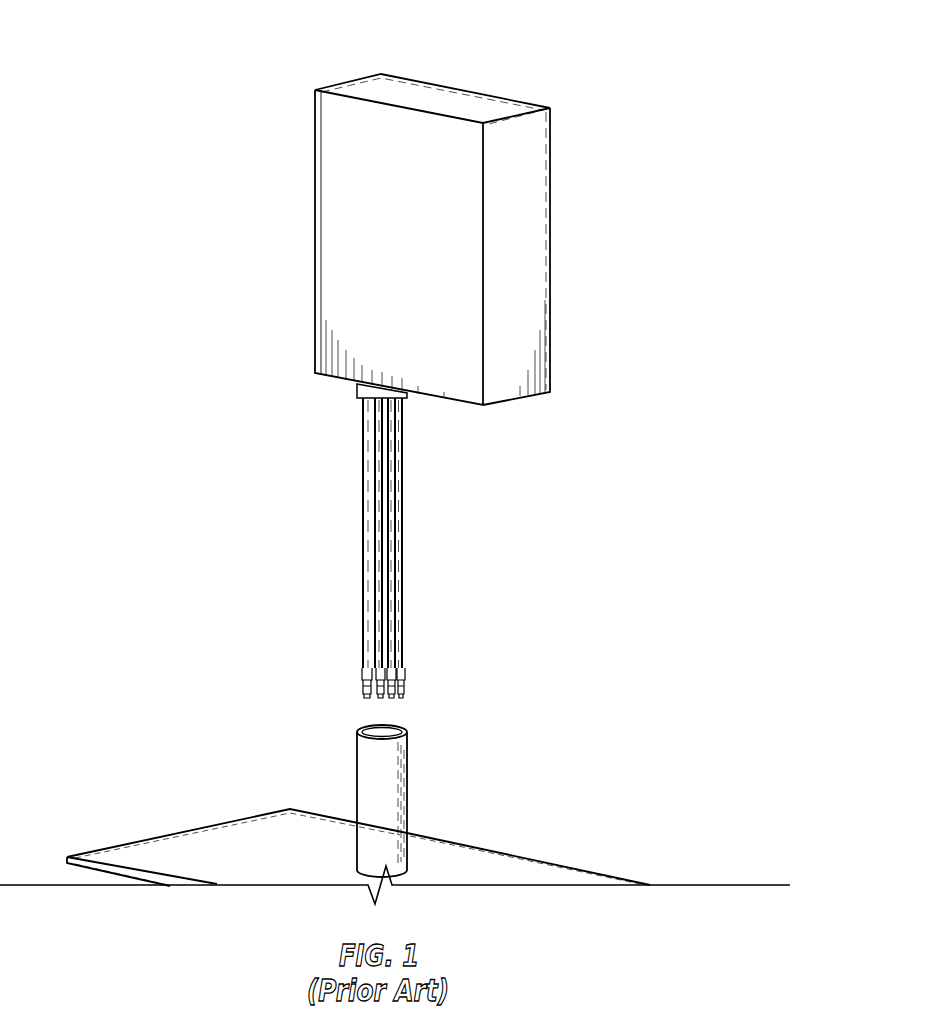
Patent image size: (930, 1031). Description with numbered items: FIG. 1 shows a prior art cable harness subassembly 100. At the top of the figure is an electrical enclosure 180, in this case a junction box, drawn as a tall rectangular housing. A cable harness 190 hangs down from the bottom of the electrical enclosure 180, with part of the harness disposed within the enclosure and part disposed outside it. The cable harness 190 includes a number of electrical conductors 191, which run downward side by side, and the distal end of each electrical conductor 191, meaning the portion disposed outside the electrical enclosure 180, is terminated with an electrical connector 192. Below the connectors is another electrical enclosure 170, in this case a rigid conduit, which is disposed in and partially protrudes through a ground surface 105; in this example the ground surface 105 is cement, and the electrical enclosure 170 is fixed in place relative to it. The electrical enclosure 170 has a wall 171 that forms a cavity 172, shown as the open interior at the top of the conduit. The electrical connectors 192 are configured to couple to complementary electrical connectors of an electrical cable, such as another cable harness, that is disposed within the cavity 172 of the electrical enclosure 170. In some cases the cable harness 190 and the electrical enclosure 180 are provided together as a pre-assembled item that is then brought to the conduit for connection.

The cable harness subassembly 100 is at (180, 58).
The ground surface 105 is at (503, 866).
The electrical enclosure 170 is at (396, 791).
The wall 171 is at (357, 790).
The cavity 172 is at (383, 731).
The electrical enclosure 180 is at (555, 249).
The cable harness 190 is at (384, 548).
The electrical conductors 191 is at (367, 488).
The electrical connector 192 is at (361, 692).